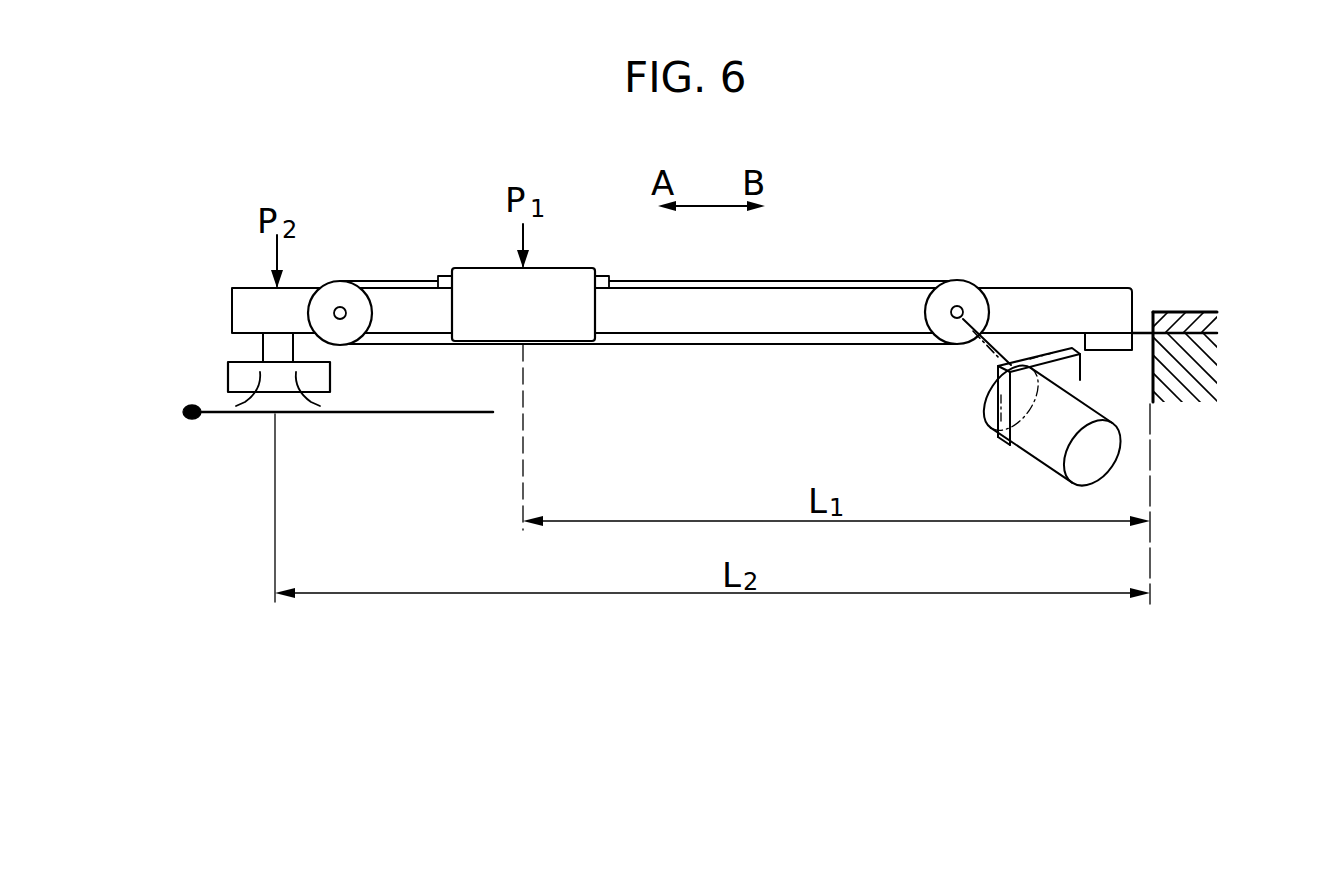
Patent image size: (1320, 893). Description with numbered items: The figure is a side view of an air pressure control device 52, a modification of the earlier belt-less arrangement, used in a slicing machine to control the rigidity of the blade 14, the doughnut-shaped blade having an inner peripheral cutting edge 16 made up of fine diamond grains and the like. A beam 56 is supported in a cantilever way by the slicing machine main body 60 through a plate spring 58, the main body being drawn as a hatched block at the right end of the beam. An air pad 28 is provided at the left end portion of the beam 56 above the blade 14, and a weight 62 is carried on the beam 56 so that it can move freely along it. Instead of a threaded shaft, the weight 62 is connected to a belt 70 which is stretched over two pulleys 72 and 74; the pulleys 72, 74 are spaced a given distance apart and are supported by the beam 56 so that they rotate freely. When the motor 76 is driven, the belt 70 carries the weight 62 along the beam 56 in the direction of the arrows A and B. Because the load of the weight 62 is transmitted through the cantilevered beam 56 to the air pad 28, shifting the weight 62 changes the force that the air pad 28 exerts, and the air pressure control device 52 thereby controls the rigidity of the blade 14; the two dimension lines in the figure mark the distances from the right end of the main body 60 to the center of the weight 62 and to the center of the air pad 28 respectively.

The blade 14 is at (262, 414).
The inner peripheral cutting edge 16 is at (190, 422).
The air pad 28 is at (233, 366).
The air pressure control device 52 is at (805, 208).
The beam 56 is at (1032, 300).
The plate spring 58 is at (808, 325).
The slicing machine main body 60 is at (1207, 368).
The weight 62 is at (571, 280).
The belt 70 is at (792, 281).
The pulley 72 is at (353, 290).
The pulley 74 is at (955, 285).
The motor 76 is at (1040, 438).